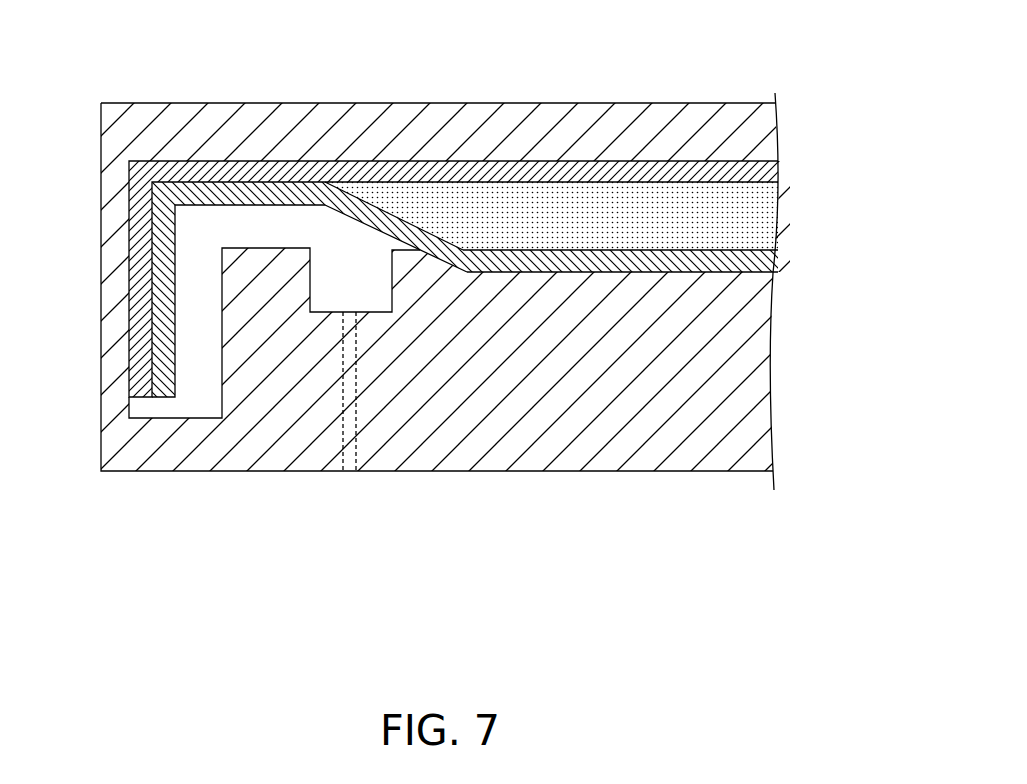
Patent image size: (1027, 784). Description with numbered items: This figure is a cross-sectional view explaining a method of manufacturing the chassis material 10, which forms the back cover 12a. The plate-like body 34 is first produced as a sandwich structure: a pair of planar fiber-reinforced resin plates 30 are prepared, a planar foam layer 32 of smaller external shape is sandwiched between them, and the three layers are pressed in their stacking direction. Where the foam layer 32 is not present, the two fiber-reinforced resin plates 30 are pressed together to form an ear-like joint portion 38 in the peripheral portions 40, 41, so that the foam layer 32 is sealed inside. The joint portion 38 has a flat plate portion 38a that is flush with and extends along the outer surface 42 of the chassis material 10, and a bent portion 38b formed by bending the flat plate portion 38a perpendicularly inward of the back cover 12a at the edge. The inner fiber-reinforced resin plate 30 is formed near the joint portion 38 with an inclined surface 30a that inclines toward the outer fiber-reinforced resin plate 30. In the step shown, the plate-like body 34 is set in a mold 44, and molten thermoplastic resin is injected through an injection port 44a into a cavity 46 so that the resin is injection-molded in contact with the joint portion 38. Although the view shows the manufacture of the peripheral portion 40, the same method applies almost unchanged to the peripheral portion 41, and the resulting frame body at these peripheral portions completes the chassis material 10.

The chassis material 10 is at (104, 46).
The back cover 12a is at (441, 281).
The fiber-reinforced resin plate 30 is at (768, 171).
The inclined surface 30a is at (428, 262).
The foam layer 32 is at (768, 217).
The plate-like body 34 is at (830, 155).
The joint portion 38 is at (55, 117).
The flat plate portion 38a is at (233, 160).
The bent portion 38b is at (128, 243).
The peripheral portion 40 is at (441, 285).
The peripheral portion 41 is at (463, 83).
The outer surface 42 is at (505, 160).
The mold 44 is at (539, 471).
The injection port 44a is at (343, 430).
The cavity 46 is at (200, 378).